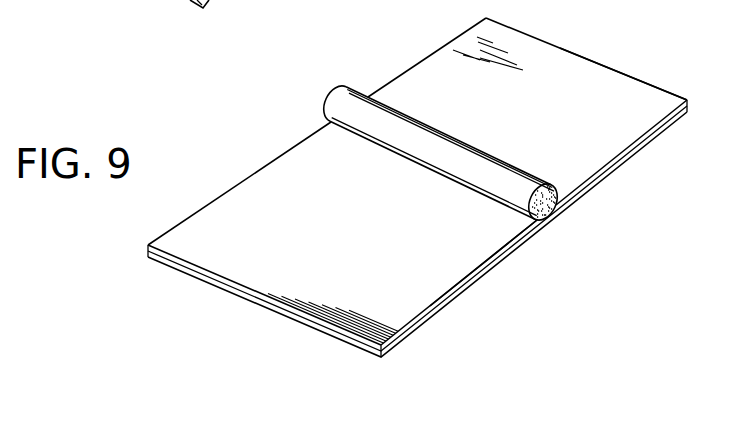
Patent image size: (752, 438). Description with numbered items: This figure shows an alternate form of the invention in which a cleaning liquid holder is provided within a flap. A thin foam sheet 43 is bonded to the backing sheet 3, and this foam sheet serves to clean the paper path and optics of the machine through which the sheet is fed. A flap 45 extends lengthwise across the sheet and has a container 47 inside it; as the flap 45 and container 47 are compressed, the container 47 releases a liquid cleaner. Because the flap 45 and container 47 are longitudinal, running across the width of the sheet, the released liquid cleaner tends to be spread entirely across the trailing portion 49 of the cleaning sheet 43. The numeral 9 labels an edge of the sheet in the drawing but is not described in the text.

The backing sheet 3 is at (462, 295).
The edge of sheet 9 is at (659, 86).
The thin foam sheet 43 is at (543, 65).
The flap 45 is at (323, 98).
The container 47 is at (557, 201).
The trailing portion 49 is at (507, 245).